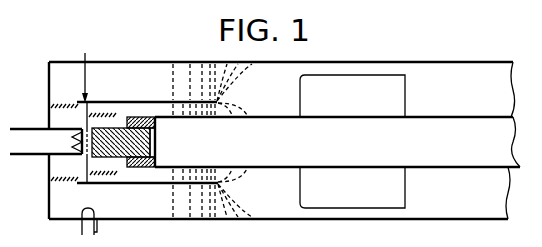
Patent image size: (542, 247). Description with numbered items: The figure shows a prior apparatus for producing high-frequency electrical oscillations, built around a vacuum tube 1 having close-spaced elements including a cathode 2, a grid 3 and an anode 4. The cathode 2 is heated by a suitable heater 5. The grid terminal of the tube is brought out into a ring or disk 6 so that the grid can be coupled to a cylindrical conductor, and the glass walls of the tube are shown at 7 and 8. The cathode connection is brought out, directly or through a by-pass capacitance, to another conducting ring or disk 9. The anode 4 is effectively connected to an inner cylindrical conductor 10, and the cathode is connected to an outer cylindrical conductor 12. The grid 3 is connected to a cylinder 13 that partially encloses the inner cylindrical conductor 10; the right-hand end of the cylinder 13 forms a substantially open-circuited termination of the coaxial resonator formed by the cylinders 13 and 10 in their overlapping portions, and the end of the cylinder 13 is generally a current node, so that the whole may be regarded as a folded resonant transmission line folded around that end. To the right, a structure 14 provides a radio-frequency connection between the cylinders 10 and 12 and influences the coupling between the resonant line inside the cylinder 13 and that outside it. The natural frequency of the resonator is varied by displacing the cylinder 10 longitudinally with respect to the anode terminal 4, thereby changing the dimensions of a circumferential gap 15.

The vacuum tube 1 is at (63, 112).
The cathode 2 is at (62, 156).
The grid 3 is at (85, 158).
The anode 4 is at (122, 141).
The heater 5 is at (66, 143).
The ring or disk 6 is at (95, 177).
The glass wall 7 is at (60, 103).
The glass wall 8 is at (102, 111).
The conducting ring or disk 9 is at (48, 100).
The inner cylindrical conductor 10 is at (274, 167).
The outer cylindrical conductor 12 is at (386, 62).
The cylinder 13 is at (160, 101).
The structure 14 is at (308, 188).
The circumferential gap 15 is at (123, 158).